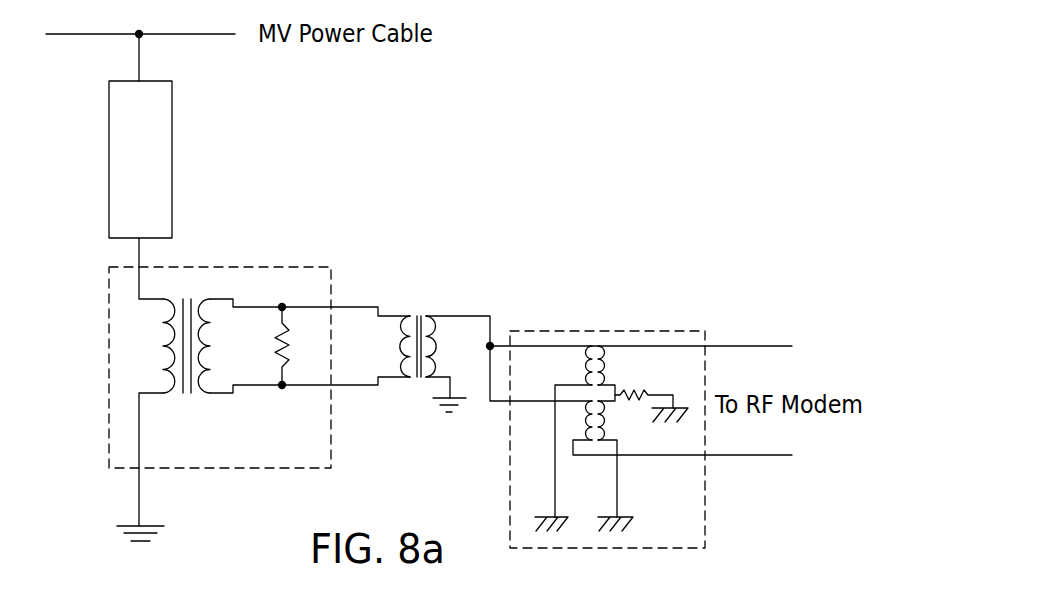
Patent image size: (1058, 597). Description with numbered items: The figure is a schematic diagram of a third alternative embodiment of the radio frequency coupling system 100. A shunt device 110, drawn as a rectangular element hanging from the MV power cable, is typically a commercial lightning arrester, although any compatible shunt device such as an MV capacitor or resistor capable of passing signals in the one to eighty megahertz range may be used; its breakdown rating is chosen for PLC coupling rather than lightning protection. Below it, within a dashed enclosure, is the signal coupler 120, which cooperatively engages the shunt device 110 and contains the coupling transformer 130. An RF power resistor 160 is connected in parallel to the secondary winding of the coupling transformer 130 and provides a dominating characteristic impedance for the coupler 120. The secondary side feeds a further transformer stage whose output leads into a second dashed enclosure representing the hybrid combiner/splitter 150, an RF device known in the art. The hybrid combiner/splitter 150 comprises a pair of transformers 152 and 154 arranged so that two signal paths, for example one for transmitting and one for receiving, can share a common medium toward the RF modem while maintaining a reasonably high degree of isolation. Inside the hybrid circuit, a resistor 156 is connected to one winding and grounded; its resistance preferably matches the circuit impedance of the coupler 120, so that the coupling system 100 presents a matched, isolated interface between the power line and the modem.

The RF coupling system 100 is at (410, 177).
The shunt device 110 is at (154, 143).
The signal coupler 120 is at (187, 282).
The coupling transformer 130 is at (187, 403).
The hybrid combiner/splitter 150 is at (537, 337).
The transformer 152 is at (593, 370).
The transformer 154 is at (590, 423).
The resistor 156 is at (643, 390).
The RF power resistor 160 is at (283, 321).